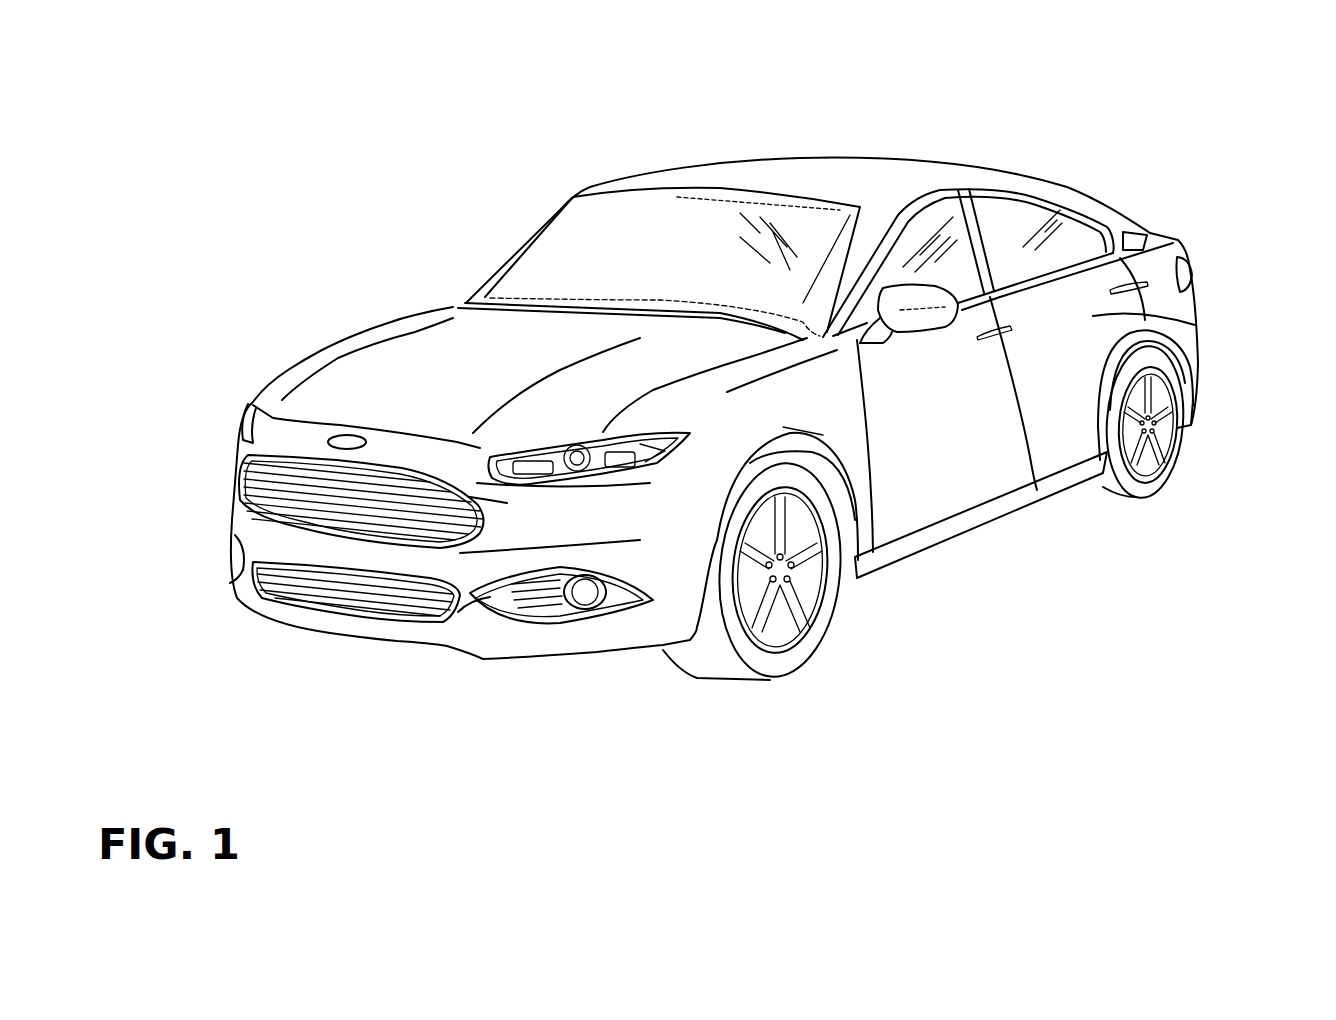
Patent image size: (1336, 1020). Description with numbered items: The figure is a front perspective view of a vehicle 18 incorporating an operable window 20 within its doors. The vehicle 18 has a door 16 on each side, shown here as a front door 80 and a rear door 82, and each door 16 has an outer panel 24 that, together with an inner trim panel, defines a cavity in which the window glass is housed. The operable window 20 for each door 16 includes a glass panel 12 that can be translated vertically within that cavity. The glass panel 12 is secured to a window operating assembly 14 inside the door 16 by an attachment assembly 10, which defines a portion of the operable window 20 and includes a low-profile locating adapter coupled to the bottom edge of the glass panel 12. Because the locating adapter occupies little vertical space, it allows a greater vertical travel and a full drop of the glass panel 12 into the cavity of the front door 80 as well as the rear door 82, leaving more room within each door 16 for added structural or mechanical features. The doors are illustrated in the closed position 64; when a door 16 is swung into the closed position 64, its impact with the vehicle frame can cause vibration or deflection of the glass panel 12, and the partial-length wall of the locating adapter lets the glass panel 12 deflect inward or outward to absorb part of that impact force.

The attachment assembly 10 is at (963, 322).
The glass panel 12 is at (937, 227).
The window operating assembly 14 is at (920, 410).
The door 16 is at (1003, 432).
The vehicle 18 is at (690, 150).
The operable window 20 is at (860, 263).
The outer panel 24 is at (1190, 324).
The closed position 64 is at (868, 507).
The front door 80 is at (883, 357).
The rear door 82 is at (1050, 377).